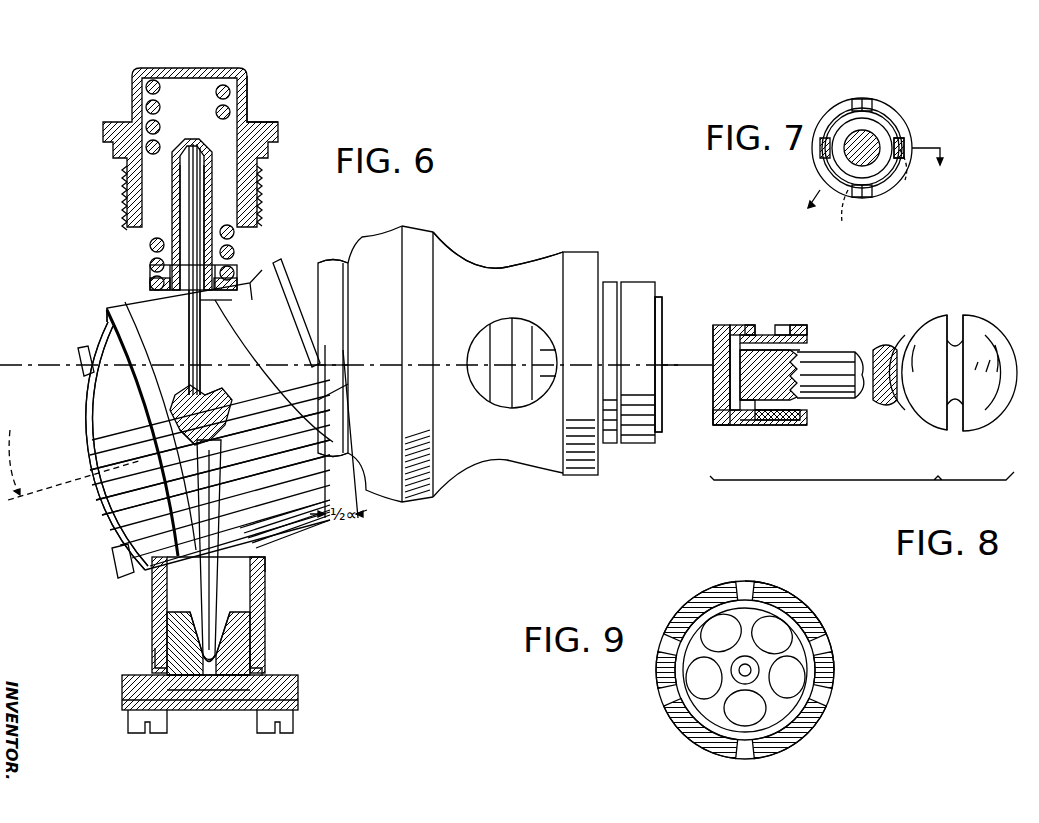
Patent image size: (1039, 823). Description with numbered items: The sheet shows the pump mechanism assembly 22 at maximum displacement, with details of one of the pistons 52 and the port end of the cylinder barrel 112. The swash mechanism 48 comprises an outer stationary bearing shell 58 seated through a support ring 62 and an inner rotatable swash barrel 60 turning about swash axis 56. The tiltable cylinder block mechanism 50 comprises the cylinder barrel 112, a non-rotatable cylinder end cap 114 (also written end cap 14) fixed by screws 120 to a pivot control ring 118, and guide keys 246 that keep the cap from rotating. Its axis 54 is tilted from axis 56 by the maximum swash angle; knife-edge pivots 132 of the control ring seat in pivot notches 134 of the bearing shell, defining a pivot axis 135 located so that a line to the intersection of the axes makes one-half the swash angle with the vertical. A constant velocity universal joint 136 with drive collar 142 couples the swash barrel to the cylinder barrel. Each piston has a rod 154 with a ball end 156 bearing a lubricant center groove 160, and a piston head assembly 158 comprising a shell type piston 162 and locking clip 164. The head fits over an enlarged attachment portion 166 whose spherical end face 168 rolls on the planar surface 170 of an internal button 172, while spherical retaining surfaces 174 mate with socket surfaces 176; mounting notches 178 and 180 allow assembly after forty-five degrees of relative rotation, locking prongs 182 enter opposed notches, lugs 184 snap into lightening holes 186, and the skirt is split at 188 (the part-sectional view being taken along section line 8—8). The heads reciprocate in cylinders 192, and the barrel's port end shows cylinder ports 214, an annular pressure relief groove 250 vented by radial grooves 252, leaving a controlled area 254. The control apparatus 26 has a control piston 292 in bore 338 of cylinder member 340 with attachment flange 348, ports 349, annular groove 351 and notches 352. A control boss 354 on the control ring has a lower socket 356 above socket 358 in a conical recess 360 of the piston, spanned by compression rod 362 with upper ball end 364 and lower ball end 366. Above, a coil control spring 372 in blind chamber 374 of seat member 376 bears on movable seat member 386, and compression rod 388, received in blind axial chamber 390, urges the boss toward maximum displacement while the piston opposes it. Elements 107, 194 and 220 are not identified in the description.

In FIG. 7, the section line 8— 8 is at (876, 184).
In FIG. 6, the end cap 14 is at (410, 226).
In FIG. 6, the pump mechanism assembly 22 is at (345, 236).
In FIG. 6, the control apparatus 26 is at (148, 199).
In FIG. 6, the swash mechanism 48 is at (520, 396).
In FIG. 6, the tiltable cylinder block mechanism 50 is at (290, 535).
In FIG. 8, the pistons 52 is at (862, 345).
In FIG. 6, the axis of the cylinder block mechanism 54 is at (44, 492).
In FIG. 6, the axis of the swash mechanism 56 is at (665, 366).
In FIG. 6, the outer stationary bearing shell 58 is at (460, 272).
In FIG. 6, the inner rotatable swash barrel 60 is at (340, 302).
In FIG. 6, the support ring 62 is at (575, 478).
In FIG. 6, the thin ring 107 is at (640, 446).
In FIG. 9, the cylinder barrel 112 is at (668, 612).
In FIG. 6, the cylinder end cap 114 is at (118, 515).
In FIG. 6, the pivot control ring 118 is at (146, 455).
In FIG. 6, the screws 120 is at (108, 372).
In FIG. 6, the knife-edge pivots 132 is at (348, 392).
In FIG. 6, the pivot notches 134 is at (348, 364).
In FIG. 6, the pivot axis 135 is at (348, 414).
In FIG. 6, the constant velocity universal joint 136 is at (348, 265).
In FIG. 6, the drive collar 142 is at (275, 262).
In FIG. 7, the piston rod 154 is at (815, 180).
In FIG. 8, the piston rod 154 is at (902, 408).
In FIG. 8, the spherical ball end portion 156 is at (962, 420).
In FIG. 8, the piston head assembly 158 is at (720, 322).
In FIG. 8, the center groove 160 is at (957, 322).
In FIG. 8, the piston head 162 is at (760, 425).
In FIG. 7, the locking clip 164 is at (900, 172).
In FIG. 8, the locking clip 164 is at (792, 320).
In FIG. 8, the head attachment portion 166 is at (722, 426).
In FIG. 8, the spherical end face 168 is at (730, 366).
In FIG. 8, the planar surface 170 is at (740, 396).
In FIG. 8, the internal integral button 172 is at (740, 382).
In FIG. 7, the spherical retaining surfaces 174 is at (835, 173).
In FIG. 8, the spherical retaining surfaces 174 is at (764, 412).
In FIG. 8, the spherical socket surfaces 176 is at (748, 410).
In FIG. 7, the mounting notches 178 is at (885, 121).
In FIG. 8, the mounting notches 178 is at (716, 330).
In FIG. 7, the mounting notches 180 is at (866, 100).
In FIG. 7, the locking prongs 182 is at (900, 140).
In FIG. 8, the locking prongs 182 is at (748, 320).
In FIG. 7, the locking lugs 184 is at (905, 166).
In FIG. 8, the locking lugs 184 is at (778, 326).
In FIG. 7, the lightening holes 186 is at (847, 216).
In FIG. 8, the lightening holes 186 is at (800, 320).
In FIG. 7, the skirt split 188 is at (855, 100).
In FIG. 9, the cylinders 192 is at (790, 742).
In FIG. 6, the drum top surface 194 is at (300, 308).
In FIG. 9, the cylinder ports 214 is at (695, 672).
In FIG. 6, the drum wall 220 is at (82, 424).
In FIG. 6, the guide keys 246 is at (78, 358).
In FIG. 9, the annular pressure relief groove 250 is at (762, 600).
In FIG. 9, the radial grooves 252 is at (800, 618).
In FIG. 9, the controlled area 254 is at (800, 675).
In FIG. 6, the swash angle control piston 292 is at (242, 700).
In FIG. 6, the bore 338 is at (262, 566).
In FIG. 6, the cylinder member 340 is at (266, 585).
In FIG. 6, the attachment flange 348 is at (125, 705).
In FIG. 6, the ports 349 is at (152, 656).
In FIG. 6, the annular groove 351 is at (262, 660).
In FIG. 6, the notches 352 is at (175, 700).
In FIG. 6, the control boss 354 is at (222, 387).
In FIG. 6, the lower segmental spherical socket 356 is at (152, 482).
In FIG. 6, the segmental spherical socket 358 is at (208, 680).
In FIG. 6, the conical recess 360 is at (240, 630).
In FIG. 6, the compression rod 362 is at (176, 540).
In FIG. 6, the upper ball end 364 is at (225, 404).
In FIG. 6, the lower ball end 366 is at (262, 628).
In FIG. 6, the coil compression control spring 372 is at (240, 248).
In FIG. 6, the blind chamber 374 is at (145, 91).
In FIG. 6, the spring seat member 376 is at (250, 108).
In FIG. 6, the movable spring seat member 386 is at (214, 168).
In FIG. 6, the compression rod 388 is at (189, 320).
In FIG. 6, the blind axial chamber 390 is at (182, 172).